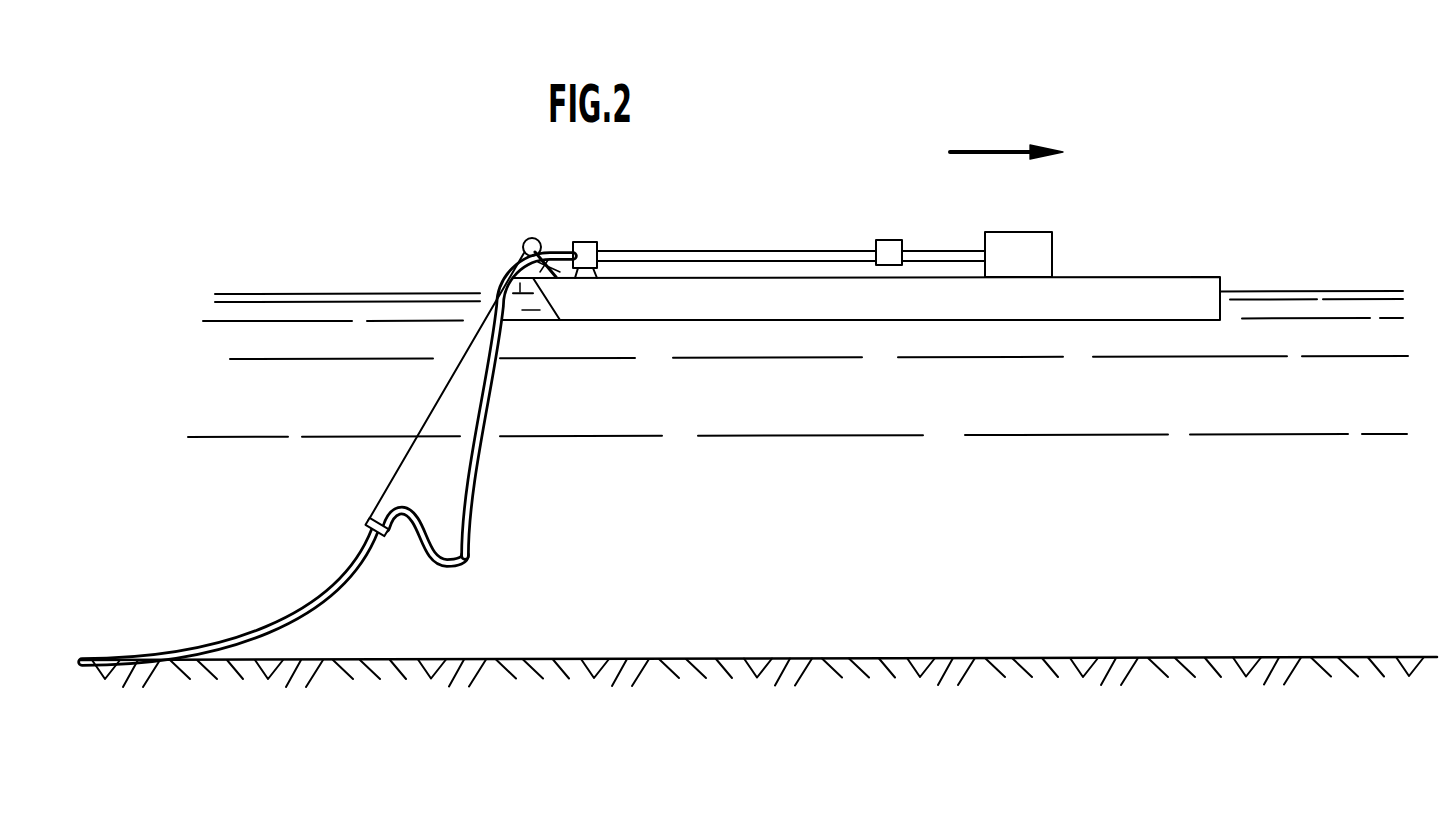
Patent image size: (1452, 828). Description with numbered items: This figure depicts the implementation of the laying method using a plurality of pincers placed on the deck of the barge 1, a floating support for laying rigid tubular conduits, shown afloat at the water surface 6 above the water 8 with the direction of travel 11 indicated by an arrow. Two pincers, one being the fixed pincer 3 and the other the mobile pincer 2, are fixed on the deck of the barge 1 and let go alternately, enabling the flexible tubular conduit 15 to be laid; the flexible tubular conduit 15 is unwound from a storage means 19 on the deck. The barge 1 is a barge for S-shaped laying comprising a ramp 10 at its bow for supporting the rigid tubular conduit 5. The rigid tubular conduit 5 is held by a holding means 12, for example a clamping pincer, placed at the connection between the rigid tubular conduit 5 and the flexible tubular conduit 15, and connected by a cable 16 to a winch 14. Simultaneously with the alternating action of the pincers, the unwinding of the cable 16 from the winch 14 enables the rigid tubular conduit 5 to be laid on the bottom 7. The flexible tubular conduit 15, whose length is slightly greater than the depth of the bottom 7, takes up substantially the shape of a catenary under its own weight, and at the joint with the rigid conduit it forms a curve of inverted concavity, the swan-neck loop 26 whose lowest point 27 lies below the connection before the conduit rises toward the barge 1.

The barge 1 is at (1142, 325).
The mobile pincer 2 is at (890, 240).
The fixed pincer 3 is at (593, 242).
The rigid tubular conduit 5 is at (358, 565).
The water surface 6 is at (1300, 292).
The bottom 7 is at (1232, 657).
The water 8 is at (1003, 497).
The ramp 10 is at (530, 293).
The direction of travel 11 is at (1000, 148).
The holding means 12 is at (366, 522).
The winch 14 is at (536, 238).
The flexible tubular conduit 15 is at (484, 410).
The cable 16 is at (432, 405).
The storage means 19 is at (1025, 235).
The flexible hose loop 26 is at (400, 507).
The bottom of loop 27 is at (447, 567).